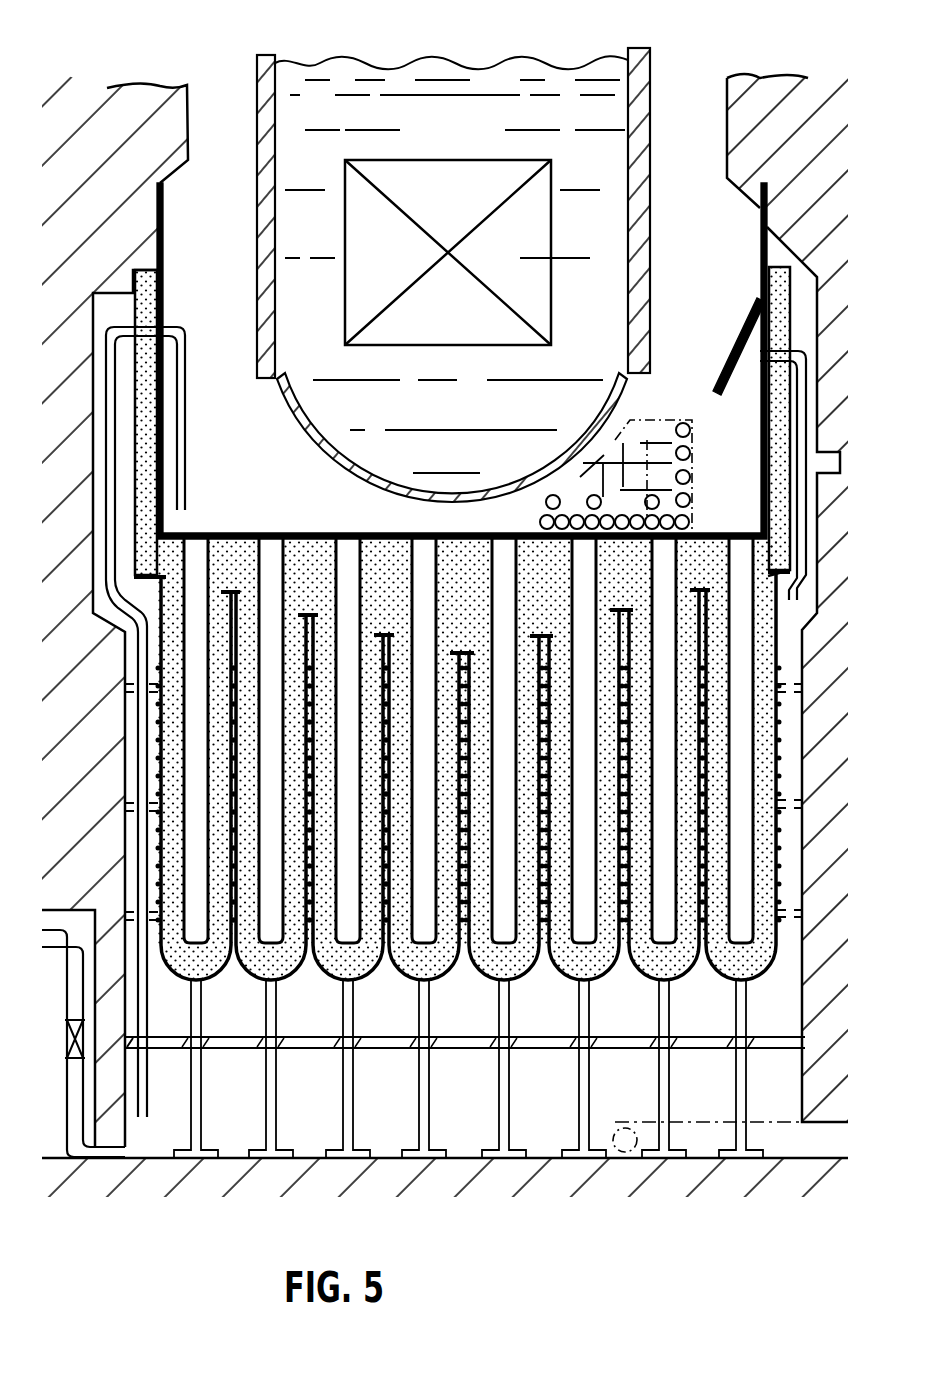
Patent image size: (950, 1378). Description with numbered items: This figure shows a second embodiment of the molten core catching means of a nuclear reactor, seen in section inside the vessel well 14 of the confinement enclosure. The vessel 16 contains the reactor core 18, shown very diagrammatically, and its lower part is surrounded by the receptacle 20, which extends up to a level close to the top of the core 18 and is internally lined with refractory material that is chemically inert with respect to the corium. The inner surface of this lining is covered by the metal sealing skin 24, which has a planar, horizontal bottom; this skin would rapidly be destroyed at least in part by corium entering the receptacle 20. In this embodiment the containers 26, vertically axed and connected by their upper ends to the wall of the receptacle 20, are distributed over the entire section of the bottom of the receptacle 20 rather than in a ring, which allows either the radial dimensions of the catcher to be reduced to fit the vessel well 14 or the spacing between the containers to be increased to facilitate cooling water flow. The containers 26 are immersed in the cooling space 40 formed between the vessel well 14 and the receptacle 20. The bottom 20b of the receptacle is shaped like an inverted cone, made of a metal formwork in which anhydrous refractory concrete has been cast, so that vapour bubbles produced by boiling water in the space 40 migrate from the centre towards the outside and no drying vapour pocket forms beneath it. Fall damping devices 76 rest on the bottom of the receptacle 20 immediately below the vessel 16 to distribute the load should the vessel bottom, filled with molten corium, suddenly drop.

The vessel well 14 is at (128, 90).
The vessel 16 is at (269, 44).
The reactor core 18 is at (485, 181).
The receptacle 20 is at (130, 291).
The bottom of the receptacle 20b is at (304, 612).
The metal sealing skin 24 is at (235, 533).
The containers 26 is at (309, 812).
The fall damping devices 76 is at (609, 443).
The cooling space 40 is at (550, 1105).